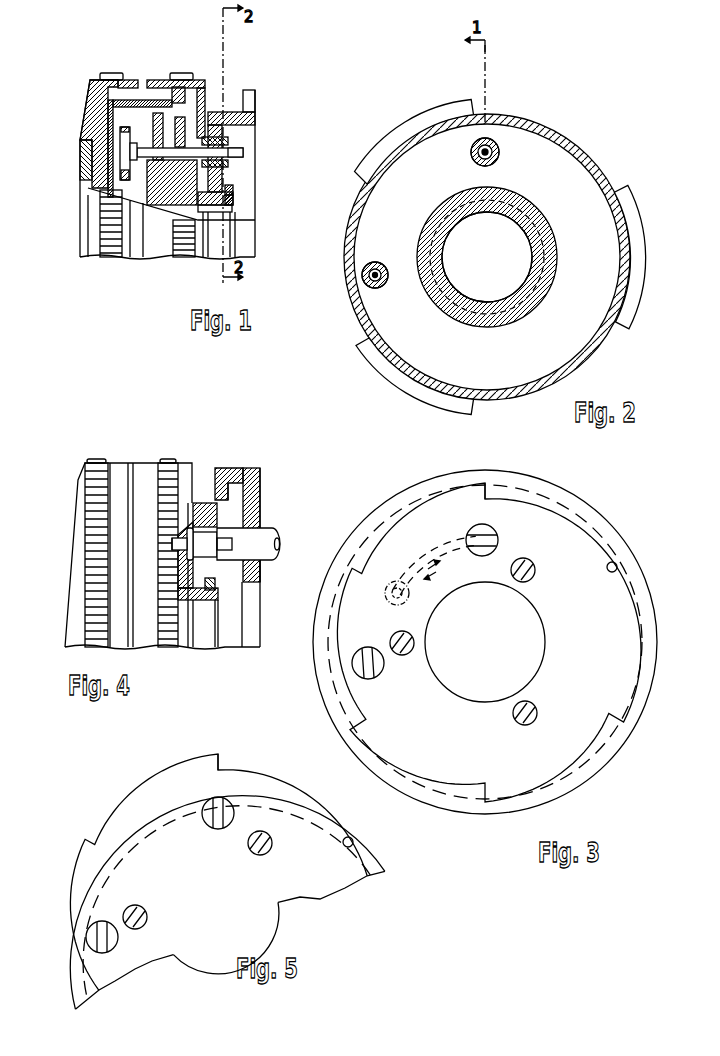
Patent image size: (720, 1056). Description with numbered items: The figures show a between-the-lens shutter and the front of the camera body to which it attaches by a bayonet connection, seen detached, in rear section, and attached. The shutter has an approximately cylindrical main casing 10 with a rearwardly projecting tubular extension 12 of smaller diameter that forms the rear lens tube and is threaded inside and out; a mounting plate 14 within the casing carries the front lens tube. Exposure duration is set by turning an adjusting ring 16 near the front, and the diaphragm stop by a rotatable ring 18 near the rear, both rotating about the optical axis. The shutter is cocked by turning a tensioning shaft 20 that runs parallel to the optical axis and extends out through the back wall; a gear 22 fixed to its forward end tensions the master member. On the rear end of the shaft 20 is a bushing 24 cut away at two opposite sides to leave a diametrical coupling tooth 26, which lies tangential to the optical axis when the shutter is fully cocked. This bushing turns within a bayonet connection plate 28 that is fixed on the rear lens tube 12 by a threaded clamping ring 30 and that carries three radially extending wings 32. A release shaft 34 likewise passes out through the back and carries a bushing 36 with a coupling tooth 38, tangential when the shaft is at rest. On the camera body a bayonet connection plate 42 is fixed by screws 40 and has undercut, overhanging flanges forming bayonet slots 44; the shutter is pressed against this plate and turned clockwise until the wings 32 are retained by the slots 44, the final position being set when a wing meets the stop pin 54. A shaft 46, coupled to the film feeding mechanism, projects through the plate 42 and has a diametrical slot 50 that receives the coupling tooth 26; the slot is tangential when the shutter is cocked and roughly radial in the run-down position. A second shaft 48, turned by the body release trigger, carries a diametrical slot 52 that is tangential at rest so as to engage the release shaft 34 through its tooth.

In FIG. 1, the main casing 10 is at (150, 103).
In FIG. 1, the tubular extension 12 is at (233, 201).
In FIG. 2, the tubular extension 12 is at (490, 300).
In FIG. 1, the mounting plate 14 is at (153, 120).
In FIG. 1, the adjusting ring 16 is at (92, 88).
In FIG. 1, the rotatable ring 18 is at (185, 77).
In FIG. 1, the tensioning shaft 20 is at (149, 157).
In FIG. 2, the tensioning shaft 20 is at (476, 163).
In FIG. 4, the tensioning shaft 20 is at (175, 547).
In FIG. 1, the gear 22 is at (127, 178).
In FIG. 1, the bushing 24 is at (228, 140).
In FIG. 2, the bushing 24 is at (494, 146).
In FIG. 4, the bushing 24 is at (205, 535).
In FIG. 1, the coupling tooth 26 is at (244, 152).
In FIG. 2, the coupling tooth 26 is at (472, 152).
In FIG. 3, the coupling tooth 26 is at (397, 581).
In FIG. 4, the coupling tooth 26 is at (213, 562).
In FIG. 1, the bayonet connection plate 28 is at (235, 112).
In FIG. 2, the bayonet connection plate 28 is at (566, 161).
In FIG. 4, the bayonet connection plate 28 is at (203, 503).
In FIG. 1, the threaded clamping ring 30 is at (233, 190).
In FIG. 2, the threaded clamping ring 30 is at (551, 240).
In FIG. 1, the wings 32 is at (249, 91).
In FIG. 2, the wings 32 is at (456, 103).
In FIG. 4, the wings 32 is at (236, 488).
In FIG. 2, the release shaft 34 is at (383, 273).
In FIG. 2, the bushing 36 is at (362, 274).
In FIG. 2, the coupling tooth 38 is at (373, 262).
In FIG. 3, the screws 40 is at (532, 576).
In FIG. 5, the screws 40 is at (271, 847).
In FIG. 3, the bayonet connection plate 42 is at (413, 505).
In FIG. 4, the bayonet connection plate 42 is at (257, 490).
In FIG. 5, the bayonet connection plate 42 is at (133, 787).
In FIG. 3, the bayonet slots 44 is at (558, 514).
In FIG. 4, the bayonet slots 44 is at (237, 487).
In FIG. 5, the bayonet slots 44 is at (250, 766).
In FIG. 3, the shaft 46 is at (480, 527).
In FIG. 4, the shaft 46 is at (268, 560).
In FIG. 5, the shaft 46 is at (234, 814).
In FIG. 3, the second shaft 48 is at (384, 667).
In FIG. 5, the second shaft 48 is at (118, 938).
In FIG. 3, the diametrical slot 50 is at (498, 540).
In FIG. 4, the diametrical slot 50 is at (228, 545).
In FIG. 5, the diametrical slot 50 is at (213, 800).
In FIG. 3, the diametrical slot 52 is at (374, 680).
In FIG. 5, the diametrical slot 52 is at (104, 952).
In FIG. 3, the stop pin 54 is at (616, 563).
In FIG. 5, the stop pin 54 is at (355, 841).